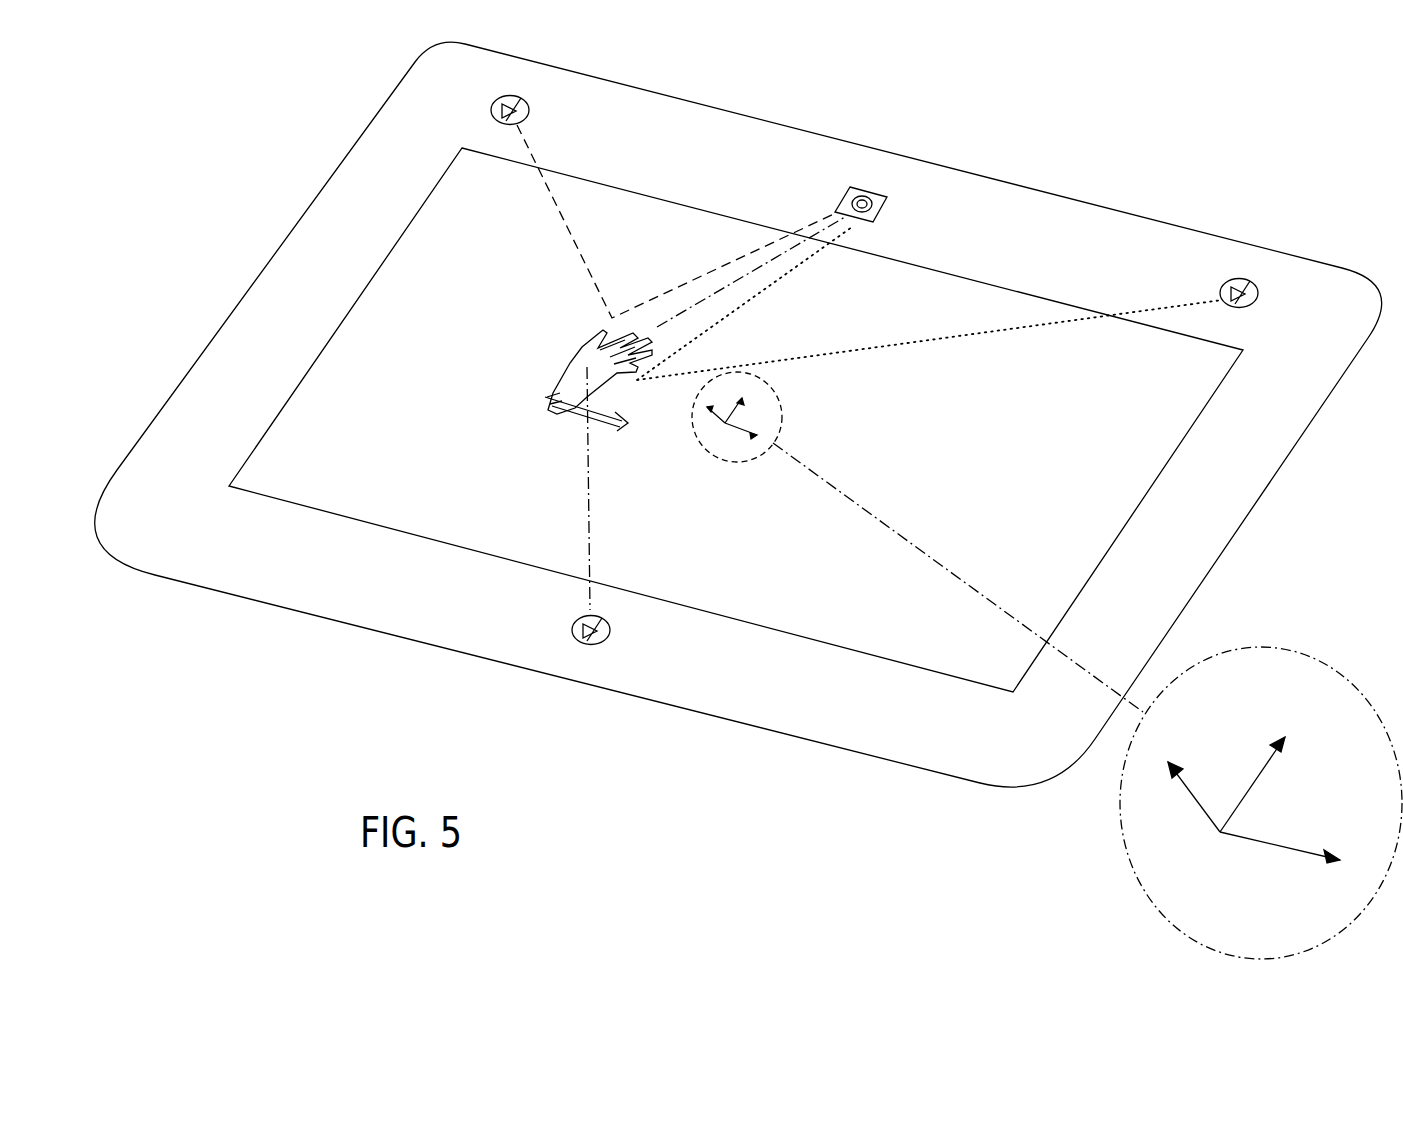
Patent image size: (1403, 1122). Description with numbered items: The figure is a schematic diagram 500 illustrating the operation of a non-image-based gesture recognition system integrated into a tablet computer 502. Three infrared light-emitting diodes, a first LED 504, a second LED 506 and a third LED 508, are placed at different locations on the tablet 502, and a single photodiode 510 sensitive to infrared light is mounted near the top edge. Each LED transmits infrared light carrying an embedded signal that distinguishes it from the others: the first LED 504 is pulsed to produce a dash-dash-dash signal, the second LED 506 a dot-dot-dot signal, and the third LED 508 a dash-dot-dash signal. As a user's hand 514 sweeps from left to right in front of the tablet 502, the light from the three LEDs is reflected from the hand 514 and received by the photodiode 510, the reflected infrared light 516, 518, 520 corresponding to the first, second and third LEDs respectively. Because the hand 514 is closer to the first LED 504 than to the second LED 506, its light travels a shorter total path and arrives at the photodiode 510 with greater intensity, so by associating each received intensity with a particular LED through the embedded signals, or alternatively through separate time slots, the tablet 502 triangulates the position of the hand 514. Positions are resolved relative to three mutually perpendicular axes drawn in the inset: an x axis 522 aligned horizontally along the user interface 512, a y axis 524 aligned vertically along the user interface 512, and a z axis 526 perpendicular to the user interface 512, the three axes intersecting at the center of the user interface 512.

The schematic diagram of non-image-based GRS operation 500 is at (738, 414).
The tablet computer 502 is at (1235, 548).
The first LED 504 is at (524, 120).
The second LED 506 is at (1255, 302).
The third LED 508 is at (606, 638).
The photodiode 510 is at (885, 205).
The user interface 512 is at (1134, 519).
The hand 514 is at (572, 358).
The reflected infrared light from first LED 516 is at (558, 212).
The reflected infrared light from second LED 518 is at (960, 338).
The reflected infrared light from third LED 520 is at (588, 495).
The x axis 522 is at (1328, 866).
The y axis 524 is at (1286, 746).
The z axis 526 is at (1181, 766).